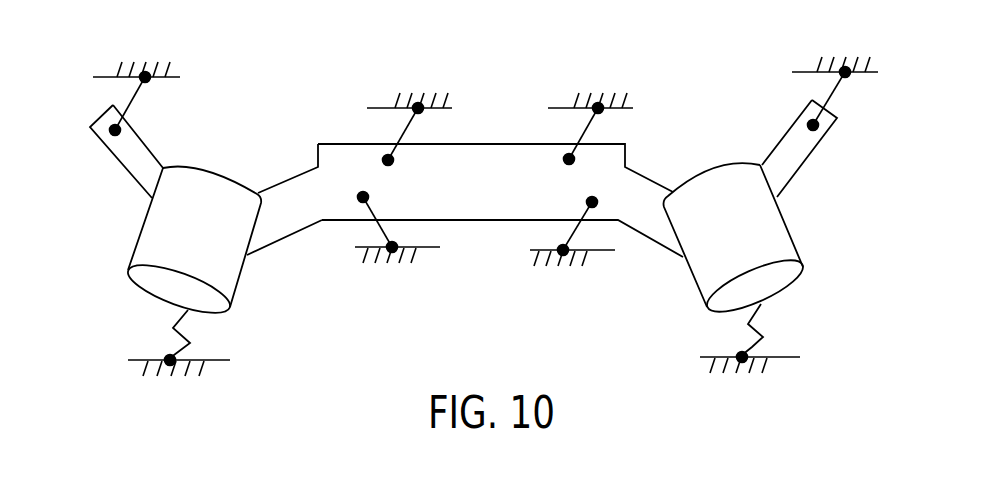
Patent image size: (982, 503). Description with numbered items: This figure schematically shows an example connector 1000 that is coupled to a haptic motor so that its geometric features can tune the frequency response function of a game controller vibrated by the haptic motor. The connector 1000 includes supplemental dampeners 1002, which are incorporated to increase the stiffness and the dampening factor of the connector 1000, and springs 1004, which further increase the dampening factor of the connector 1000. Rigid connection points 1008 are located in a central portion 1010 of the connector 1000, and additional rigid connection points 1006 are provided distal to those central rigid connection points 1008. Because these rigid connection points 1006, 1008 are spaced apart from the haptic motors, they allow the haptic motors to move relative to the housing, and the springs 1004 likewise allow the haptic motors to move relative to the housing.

The connector 1000 is at (465, 130).
The supplemental dampeners 1002 is at (110, 169).
The springs 1004 is at (210, 329).
The additional rigid connection points 1006 is at (143, 58).
The rigid connection points 1008 is at (423, 86).
The central portion 1010 is at (513, 194).